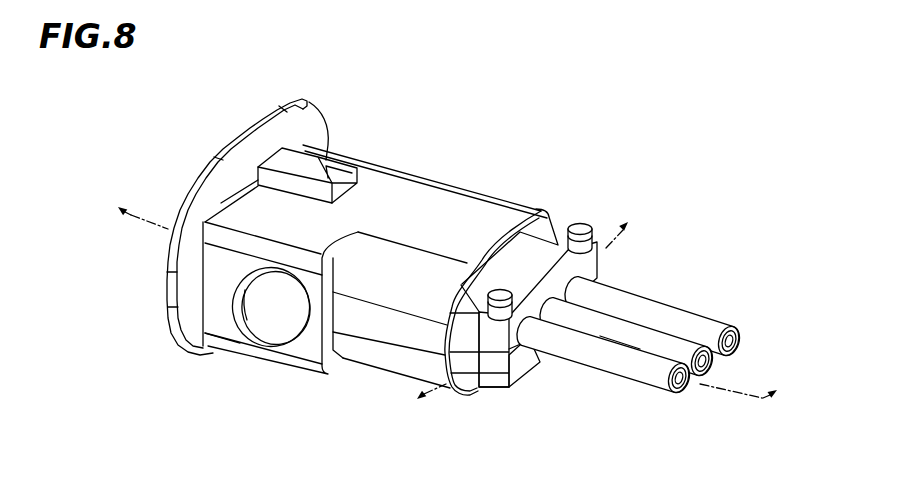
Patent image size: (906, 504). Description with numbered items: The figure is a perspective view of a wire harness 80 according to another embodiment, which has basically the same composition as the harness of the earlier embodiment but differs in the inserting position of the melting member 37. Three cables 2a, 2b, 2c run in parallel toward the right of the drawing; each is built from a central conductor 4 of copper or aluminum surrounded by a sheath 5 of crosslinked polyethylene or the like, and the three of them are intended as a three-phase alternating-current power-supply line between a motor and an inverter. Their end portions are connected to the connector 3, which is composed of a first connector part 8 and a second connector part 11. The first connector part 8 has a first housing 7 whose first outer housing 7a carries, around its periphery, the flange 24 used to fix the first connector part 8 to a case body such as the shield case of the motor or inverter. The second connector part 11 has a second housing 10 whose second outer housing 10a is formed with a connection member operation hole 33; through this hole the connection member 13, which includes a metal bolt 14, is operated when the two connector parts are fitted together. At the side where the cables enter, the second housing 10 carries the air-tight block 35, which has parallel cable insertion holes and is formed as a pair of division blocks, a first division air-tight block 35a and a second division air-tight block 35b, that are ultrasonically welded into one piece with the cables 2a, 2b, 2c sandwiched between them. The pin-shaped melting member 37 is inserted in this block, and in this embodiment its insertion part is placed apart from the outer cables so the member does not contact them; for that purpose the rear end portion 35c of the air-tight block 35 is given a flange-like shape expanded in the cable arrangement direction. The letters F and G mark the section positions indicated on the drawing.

The wire harness 80 is at (684, 106).
The connector 3 is at (334, 233).
The first housing 7 is at (167, 320).
The first outer housing 7a is at (252, 190).
The first connector part 8 is at (268, 110).
The flange 24 is at (214, 157).
The second housing 10 is at (390, 183).
The second outer housing 10a is at (433, 192).
The second connector part 11 is at (521, 170).
The connection member 13 is at (285, 324).
The bolt 14 is at (264, 318).
The connection member operation hole 33 is at (240, 318).
The air-tight block 35 is at (574, 310).
The first division air-tight block 35a is at (520, 368).
The second division air-tight block 35b is at (600, 267).
The rear end portion 35c is at (487, 382).
The melting member 37 is at (503, 290).
The cable 2a is at (610, 386).
The cable 2b is at (655, 333).
The cable 2c is at (718, 325).
The central conductor 4 is at (683, 385).
The sheath 5 is at (628, 368).
The section line F- F is at (525, 311).
The section line G- G is at (446, 304).